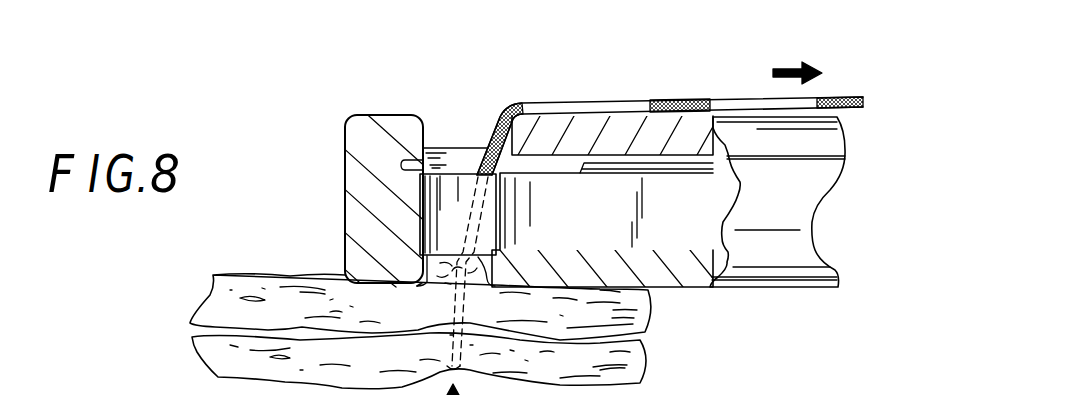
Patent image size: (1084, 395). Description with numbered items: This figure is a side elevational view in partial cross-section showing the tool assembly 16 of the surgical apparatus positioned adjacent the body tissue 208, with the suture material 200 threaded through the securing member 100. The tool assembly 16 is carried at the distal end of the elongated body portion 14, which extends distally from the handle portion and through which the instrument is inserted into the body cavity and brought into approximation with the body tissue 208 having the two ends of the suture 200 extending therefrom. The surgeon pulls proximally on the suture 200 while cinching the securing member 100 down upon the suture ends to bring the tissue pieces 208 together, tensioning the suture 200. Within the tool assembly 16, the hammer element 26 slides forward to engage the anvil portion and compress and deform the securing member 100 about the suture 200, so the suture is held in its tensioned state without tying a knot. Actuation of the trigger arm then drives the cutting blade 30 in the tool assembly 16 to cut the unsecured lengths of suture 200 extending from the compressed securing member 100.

The elongated body portion 14 is at (795, 213).
The tool assembly 16 is at (398, 106).
The hammer element 26 is at (691, 228).
The cutting blade 30 is at (637, 167).
The securing member 100 is at (450, 175).
The suture material 200 is at (723, 103).
The body tissue 208 is at (262, 290).